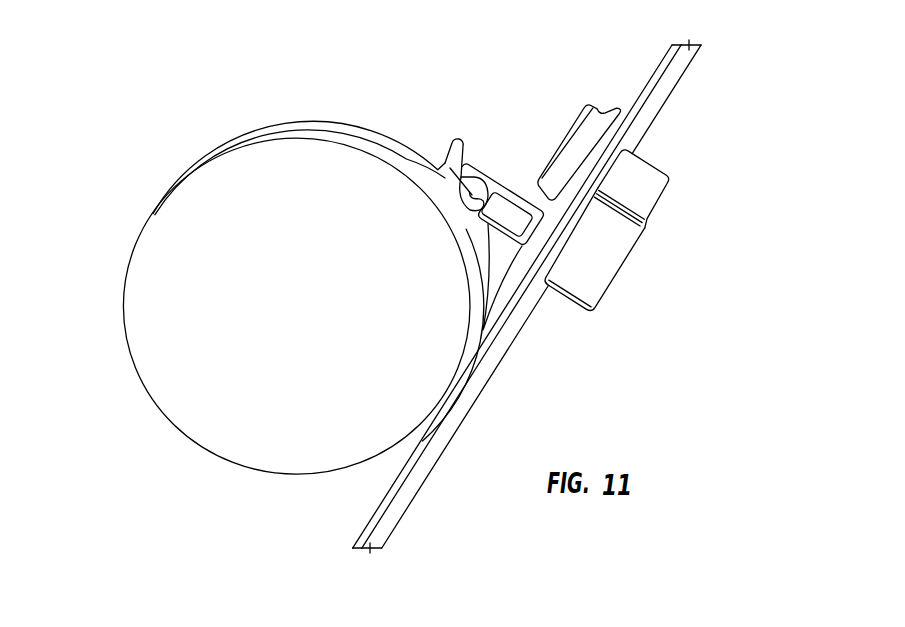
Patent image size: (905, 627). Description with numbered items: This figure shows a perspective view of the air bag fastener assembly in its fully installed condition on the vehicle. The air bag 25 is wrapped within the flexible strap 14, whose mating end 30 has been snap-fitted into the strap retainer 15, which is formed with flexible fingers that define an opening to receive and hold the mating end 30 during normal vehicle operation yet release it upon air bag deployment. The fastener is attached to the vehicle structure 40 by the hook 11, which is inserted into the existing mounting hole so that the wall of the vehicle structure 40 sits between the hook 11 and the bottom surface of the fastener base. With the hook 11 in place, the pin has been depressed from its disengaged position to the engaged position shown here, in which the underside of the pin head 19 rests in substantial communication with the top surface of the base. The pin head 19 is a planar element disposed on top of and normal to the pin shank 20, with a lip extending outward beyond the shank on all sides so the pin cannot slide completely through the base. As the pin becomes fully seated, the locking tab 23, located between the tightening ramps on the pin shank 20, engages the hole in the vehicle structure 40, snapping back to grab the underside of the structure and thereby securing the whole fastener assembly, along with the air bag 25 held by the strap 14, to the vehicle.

The hook 11 is at (605, 274).
The strap 14 is at (282, 123).
The strap retainer 15 is at (485, 177).
The pin head 19 is at (590, 105).
The pin shank 20 is at (650, 192).
The locking tab 23 is at (637, 157).
The air bag 25 is at (150, 348).
The mating end 30 is at (448, 158).
The vehicle structure 40 is at (398, 508).